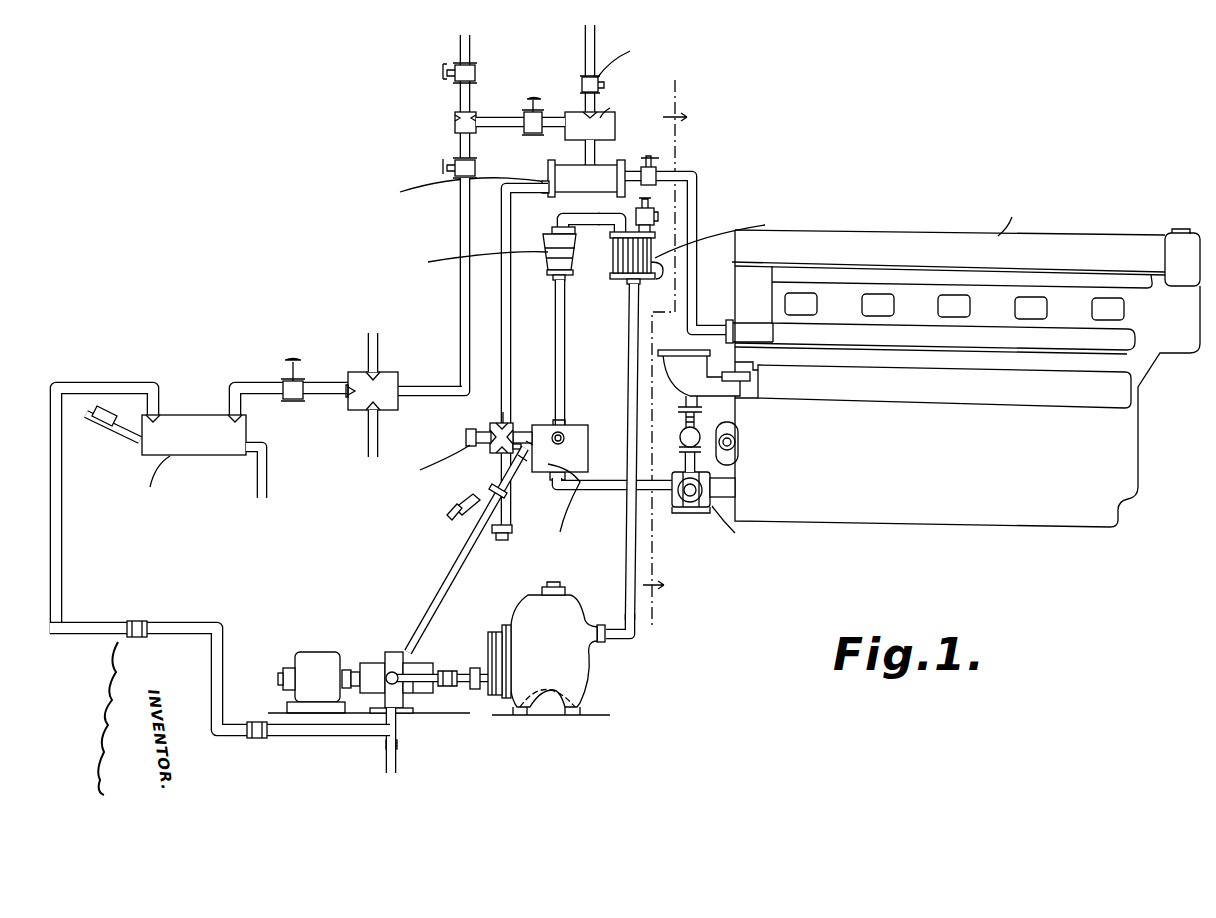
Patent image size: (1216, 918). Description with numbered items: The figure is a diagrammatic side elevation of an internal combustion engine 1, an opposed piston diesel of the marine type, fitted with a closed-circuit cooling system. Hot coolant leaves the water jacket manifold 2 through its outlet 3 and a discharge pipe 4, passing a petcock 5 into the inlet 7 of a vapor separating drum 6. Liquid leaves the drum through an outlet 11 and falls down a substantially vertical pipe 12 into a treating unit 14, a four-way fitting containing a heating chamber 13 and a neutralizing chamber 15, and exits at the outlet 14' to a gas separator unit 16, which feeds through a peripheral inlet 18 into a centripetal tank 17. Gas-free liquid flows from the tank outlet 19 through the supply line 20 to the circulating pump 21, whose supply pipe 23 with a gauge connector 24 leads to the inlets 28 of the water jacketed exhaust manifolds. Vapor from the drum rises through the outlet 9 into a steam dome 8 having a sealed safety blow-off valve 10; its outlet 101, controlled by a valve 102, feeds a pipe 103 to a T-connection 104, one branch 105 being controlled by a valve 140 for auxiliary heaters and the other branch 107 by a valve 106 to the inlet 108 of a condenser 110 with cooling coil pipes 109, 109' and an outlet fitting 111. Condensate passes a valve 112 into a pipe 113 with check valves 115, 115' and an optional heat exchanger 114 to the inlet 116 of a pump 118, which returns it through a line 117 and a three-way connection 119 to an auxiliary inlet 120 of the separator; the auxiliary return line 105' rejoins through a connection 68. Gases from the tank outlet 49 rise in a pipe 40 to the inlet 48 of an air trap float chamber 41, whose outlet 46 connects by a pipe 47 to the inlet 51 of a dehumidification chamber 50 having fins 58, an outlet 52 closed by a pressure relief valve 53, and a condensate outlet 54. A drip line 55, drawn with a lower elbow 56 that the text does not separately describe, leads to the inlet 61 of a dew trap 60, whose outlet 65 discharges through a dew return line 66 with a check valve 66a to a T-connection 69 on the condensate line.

The internal combustion engine 1 is at (942, 232).
The water jacket manifold 2 is at (779, 352).
The outlet 3 is at (782, 338).
The discharge pipe 4 is at (694, 168).
The petcock 5 is at (650, 160).
The vapor separating drum 6 is at (564, 157).
The inlet 7 is at (640, 168).
The steam dome 8 is at (615, 122).
The outlet 9 is at (596, 152).
The safety blow-off valve 10 is at (600, 82).
The outlet 11 is at (542, 185).
The pipe 12 is at (514, 205).
The heating chamber 13 is at (512, 516).
The treating unit 14 is at (490, 424).
The outlet 14' is at (520, 398).
The neutralizing chamber 15 is at (466, 438).
The gas separator unit 16 is at (520, 432).
The centripetal tank 17 is at (575, 425).
The peripheral inlet 18 is at (575, 438).
The tank outlet 19 is at (552, 478).
The supply line 20 is at (603, 492).
The circulating pump 21 is at (695, 508).
The supply pipe 23 is at (685, 460).
The gauge connector 24 is at (680, 420).
The inlets 28 is at (699, 398).
The pipe 40 is at (566, 386).
The air trap float chamber 41 is at (548, 262).
The outlet 46 is at (552, 232).
The pipe 47 is at (586, 226).
The inlet 48 is at (566, 280).
The tank outlet 49 is at (560, 420).
The dehumidification chamber 50 is at (613, 258).
The inlet 51 is at (618, 211).
The outlet 52 is at (652, 230).
The pressure relief valve 53 is at (658, 212).
The condensate outlet 54 is at (626, 288).
The drip line 55 is at (628, 335).
The elbow 56 is at (618, 640).
The ribs or fins 58 is at (655, 282).
The dew trap 60 is at (578, 602).
The inlet 61 is at (605, 625).
The outlet 65 is at (476, 668).
The dew return line 66 is at (430, 694).
The check valve 66a is at (466, 690).
The connection 68 is at (398, 744).
The T-connection 69 is at (388, 684).
The outlet 101 is at (545, 120).
The valve 102 is at (536, 97).
The pipe 103 is at (497, 118).
The T-connection 104 is at (455, 123).
The branch 105 is at (490, 96).
The return line 105' is at (416, 744).
The valve 106 is at (448, 176).
The branch 107 is at (460, 230).
The inlet 108 is at (445, 386).
The pipe 109 is at (381, 342).
The pipe 109' is at (400, 433).
The condenser 110 is at (388, 370).
The outlet fitting 111 is at (345, 383).
The valve 112 is at (292, 400).
The pipe 113 is at (225, 388).
The heat exchanger 114 is at (206, 456).
The non-return check valve 115 is at (136, 613).
The non-return check valve 115' is at (248, 742).
The inlet 116 is at (392, 650).
The line 117 is at (452, 577).
The pump 118 is at (372, 660).
The three-way connection 119 is at (482, 504).
The auxiliary inlet 120 is at (512, 458).
The valve 140 is at (455, 64).